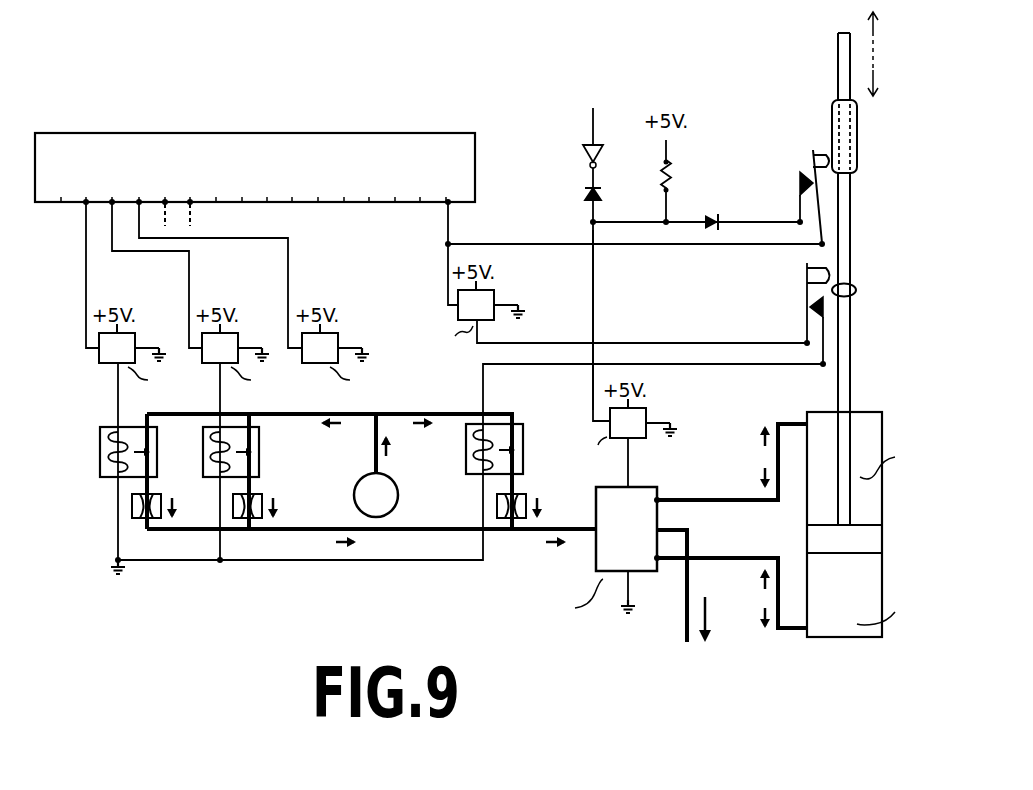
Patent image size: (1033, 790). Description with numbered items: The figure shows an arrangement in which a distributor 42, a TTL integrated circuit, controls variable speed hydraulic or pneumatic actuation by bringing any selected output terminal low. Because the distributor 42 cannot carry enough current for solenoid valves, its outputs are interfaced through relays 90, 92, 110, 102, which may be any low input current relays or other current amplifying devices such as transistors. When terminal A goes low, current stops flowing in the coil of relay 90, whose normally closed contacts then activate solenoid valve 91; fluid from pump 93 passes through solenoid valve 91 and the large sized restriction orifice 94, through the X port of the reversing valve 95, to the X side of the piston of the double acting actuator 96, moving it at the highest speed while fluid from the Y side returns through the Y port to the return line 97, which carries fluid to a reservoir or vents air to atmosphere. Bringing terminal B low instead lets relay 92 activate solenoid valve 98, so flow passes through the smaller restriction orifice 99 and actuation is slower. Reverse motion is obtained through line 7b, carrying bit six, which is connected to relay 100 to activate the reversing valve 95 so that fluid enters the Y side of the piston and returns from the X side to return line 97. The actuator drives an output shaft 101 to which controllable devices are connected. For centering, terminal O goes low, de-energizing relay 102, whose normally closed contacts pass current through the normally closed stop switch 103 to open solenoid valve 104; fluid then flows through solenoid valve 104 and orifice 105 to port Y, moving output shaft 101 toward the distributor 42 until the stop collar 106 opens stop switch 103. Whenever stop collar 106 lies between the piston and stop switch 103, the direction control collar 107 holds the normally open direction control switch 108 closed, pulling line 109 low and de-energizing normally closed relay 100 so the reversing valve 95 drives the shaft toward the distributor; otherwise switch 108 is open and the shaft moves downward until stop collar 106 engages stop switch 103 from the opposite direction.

The distributor 42 is at (33, 192).
The relay 90 is at (130, 332).
The relay 92 is at (233, 332).
The relay 110 is at (333, 332).
The relay 102 is at (486, 296).
The relay 100 is at (648, 407).
The line 7b is at (590, 128).
The line 109 is at (597, 302).
The direction control switch 108 is at (808, 166).
The stop switch 103 is at (802, 307).
The output shaft 101 is at (856, 242).
The direction control collar 107 is at (865, 154).
The stop collar 106 is at (880, 295).
The double acting actuator 96 is at (888, 560).
The reversing valve 95 is at (662, 491).
The return line 97 is at (693, 541).
The solenoid valve 91 is at (100, 452).
The solenoid valve 98 is at (263, 456).
The solenoid valve 104 is at (466, 457).
The restriction orifice 94 is at (132, 508).
The restriction orifice 99 is at (263, 494).
The orifice 105 is at (496, 504).
The pump 93 is at (356, 482).